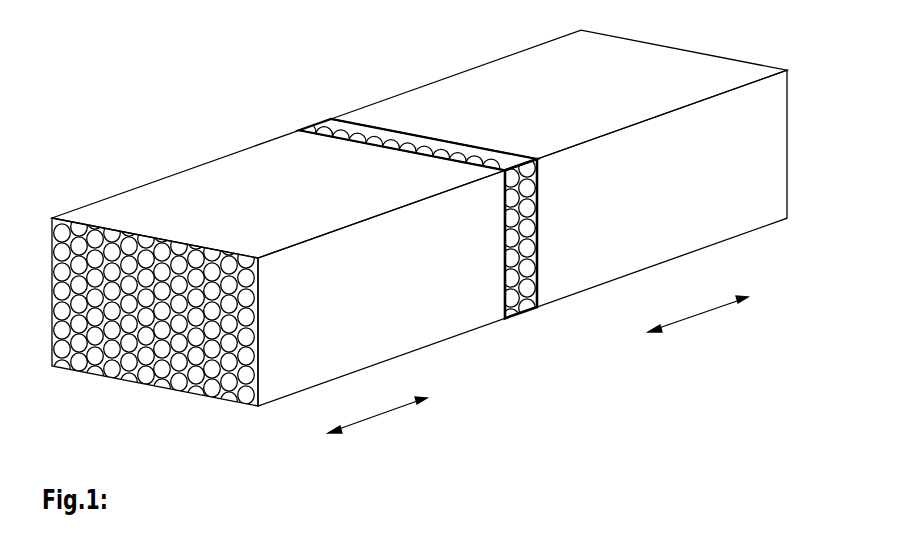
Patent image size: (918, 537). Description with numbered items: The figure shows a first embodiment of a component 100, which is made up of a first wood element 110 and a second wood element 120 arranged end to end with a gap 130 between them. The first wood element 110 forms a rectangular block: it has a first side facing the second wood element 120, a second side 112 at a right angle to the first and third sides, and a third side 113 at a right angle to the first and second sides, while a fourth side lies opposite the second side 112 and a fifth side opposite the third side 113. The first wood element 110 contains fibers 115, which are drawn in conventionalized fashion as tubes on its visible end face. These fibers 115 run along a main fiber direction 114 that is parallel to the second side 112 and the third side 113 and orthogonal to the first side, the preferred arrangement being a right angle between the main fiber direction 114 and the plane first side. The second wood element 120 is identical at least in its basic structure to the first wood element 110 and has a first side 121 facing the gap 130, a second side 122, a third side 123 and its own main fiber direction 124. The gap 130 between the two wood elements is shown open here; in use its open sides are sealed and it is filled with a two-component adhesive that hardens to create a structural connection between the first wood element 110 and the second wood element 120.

The component 100 is at (195, 44).
The first wood element 110 is at (268, 147).
The second side 112 is at (178, 195).
The third side 113 is at (457, 298).
The main fiber direction 114 is at (364, 423).
The fibers 115 is at (80, 238).
The second wood element 120 is at (393, 97).
The first side 121 is at (523, 282).
The second side 122 is at (510, 85).
The third side 123 is at (625, 240).
The main fiber direction 124 is at (697, 317).
The gap 130 is at (311, 104).